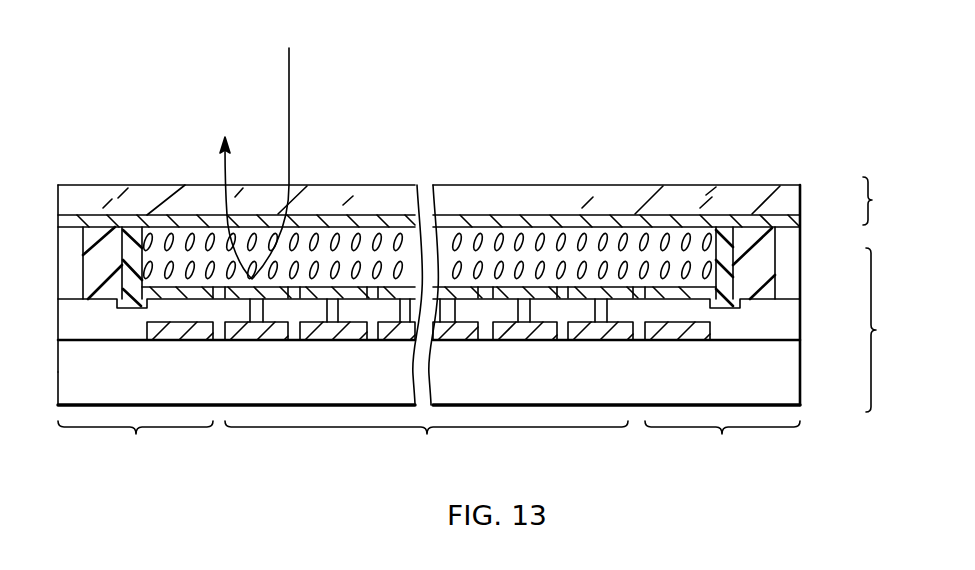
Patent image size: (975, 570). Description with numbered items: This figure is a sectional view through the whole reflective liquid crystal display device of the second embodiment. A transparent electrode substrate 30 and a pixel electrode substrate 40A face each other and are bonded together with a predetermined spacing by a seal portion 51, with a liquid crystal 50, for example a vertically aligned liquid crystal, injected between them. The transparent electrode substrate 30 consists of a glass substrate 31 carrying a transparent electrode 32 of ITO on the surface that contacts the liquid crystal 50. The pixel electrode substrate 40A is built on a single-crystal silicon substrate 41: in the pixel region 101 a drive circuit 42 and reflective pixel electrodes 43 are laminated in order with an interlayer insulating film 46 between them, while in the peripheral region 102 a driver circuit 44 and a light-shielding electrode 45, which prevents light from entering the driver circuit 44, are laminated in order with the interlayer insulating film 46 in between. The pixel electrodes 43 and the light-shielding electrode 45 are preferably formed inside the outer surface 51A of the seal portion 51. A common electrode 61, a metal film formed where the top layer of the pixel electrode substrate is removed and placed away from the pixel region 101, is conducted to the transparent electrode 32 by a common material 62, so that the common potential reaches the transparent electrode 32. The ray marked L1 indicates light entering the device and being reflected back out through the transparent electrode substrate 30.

The glass substrate 31 is at (786, 196).
The transparent electrode 32 is at (787, 222).
The transparent electrode substrate 30 is at (883, 201).
The light-shielding electrode 45 is at (703, 256).
The liquid crystal 50 is at (599, 238).
The common electrode 61 is at (688, 290).
The interlayer insulating film 46 is at (788, 307).
The drive circuit (driver circuit) 44 is at (713, 324).
The reflective pixel electrode 43 is at (615, 300).
The drive circuit 42 is at (625, 341).
The single-crystal silicon substrate 41 is at (788, 387).
The pixel electrode substrate 40A is at (895, 330).
The seal portion 51 is at (96, 253).
The outer surface of the seal portion 51A is at (78, 252).
The common material 62 is at (131, 238).
The incident light L1 is at (290, 90).
The pixel region 101 is at (426, 445).
The peripheral region 102 is at (429, 445).